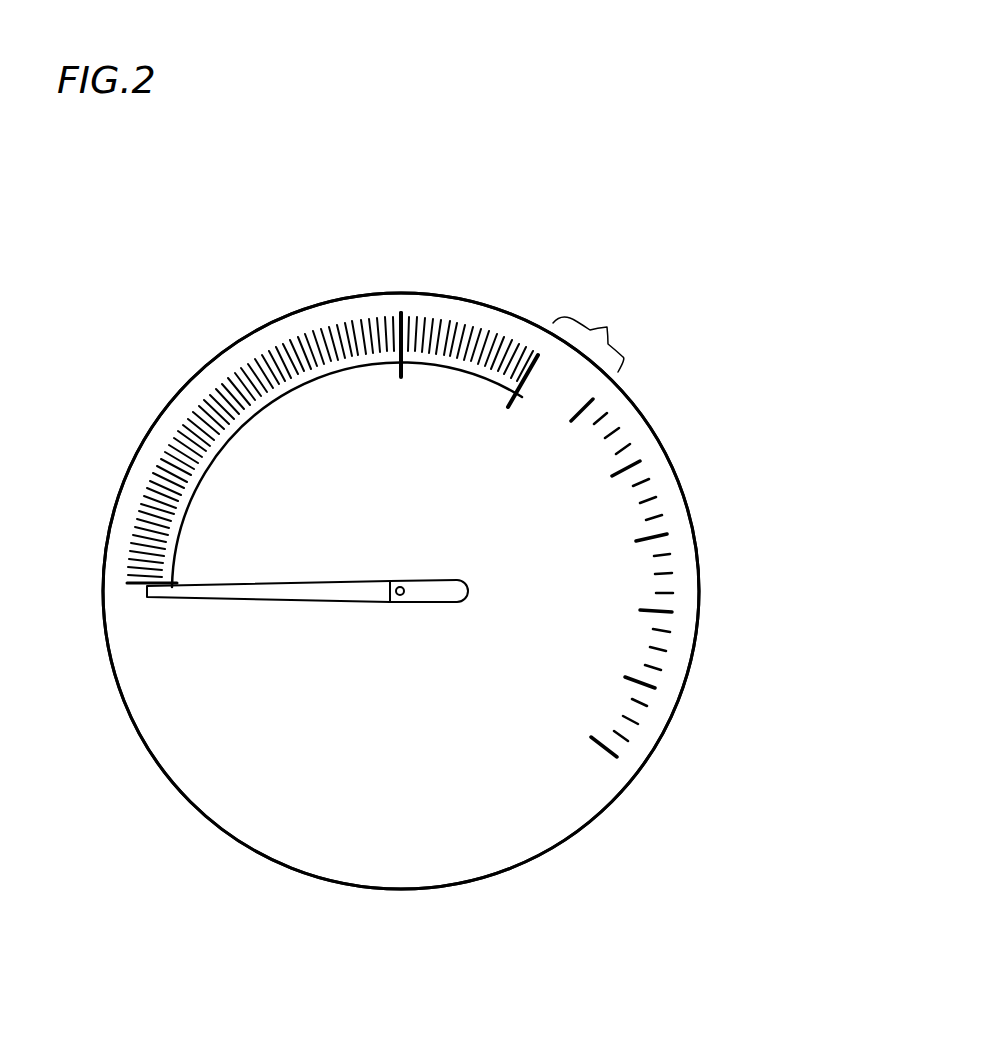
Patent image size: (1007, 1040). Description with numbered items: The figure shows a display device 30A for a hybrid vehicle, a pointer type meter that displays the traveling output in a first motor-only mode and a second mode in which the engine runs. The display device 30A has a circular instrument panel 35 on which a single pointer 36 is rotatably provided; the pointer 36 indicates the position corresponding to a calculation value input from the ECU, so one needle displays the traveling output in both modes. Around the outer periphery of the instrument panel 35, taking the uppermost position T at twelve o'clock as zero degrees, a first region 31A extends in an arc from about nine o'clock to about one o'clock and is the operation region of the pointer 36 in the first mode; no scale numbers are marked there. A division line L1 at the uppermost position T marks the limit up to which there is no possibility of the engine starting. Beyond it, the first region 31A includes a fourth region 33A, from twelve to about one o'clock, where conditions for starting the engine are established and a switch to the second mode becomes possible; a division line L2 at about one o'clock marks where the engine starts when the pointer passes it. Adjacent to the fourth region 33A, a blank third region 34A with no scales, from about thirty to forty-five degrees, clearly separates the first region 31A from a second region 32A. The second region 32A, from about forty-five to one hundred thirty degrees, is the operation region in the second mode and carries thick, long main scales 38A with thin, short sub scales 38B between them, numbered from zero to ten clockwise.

The display device 30A is at (577, 876).
The first region 31A is at (557, 320).
The second region 32A is at (623, 370).
The fourth region 33A is at (405, 283).
The third region 34A is at (614, 330).
The instrument panel 35 is at (243, 800).
The pointer 36 is at (288, 590).
The main scales 38A is at (576, 416).
The sub scales 38B is at (633, 444).
The division line L1 is at (402, 360).
The division line L2 is at (515, 393).
The uppermost position T is at (412, 292).